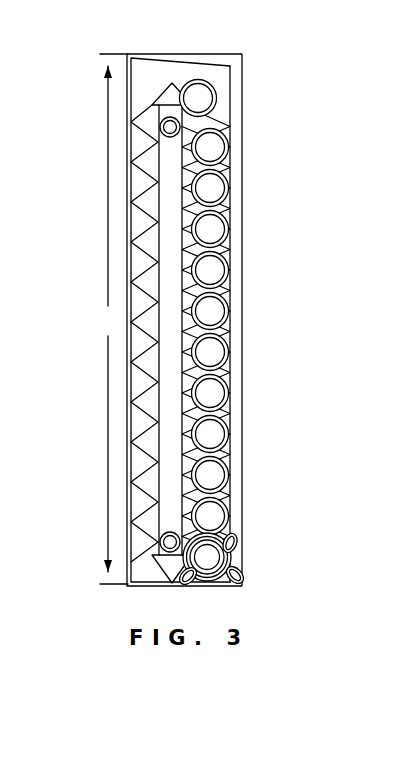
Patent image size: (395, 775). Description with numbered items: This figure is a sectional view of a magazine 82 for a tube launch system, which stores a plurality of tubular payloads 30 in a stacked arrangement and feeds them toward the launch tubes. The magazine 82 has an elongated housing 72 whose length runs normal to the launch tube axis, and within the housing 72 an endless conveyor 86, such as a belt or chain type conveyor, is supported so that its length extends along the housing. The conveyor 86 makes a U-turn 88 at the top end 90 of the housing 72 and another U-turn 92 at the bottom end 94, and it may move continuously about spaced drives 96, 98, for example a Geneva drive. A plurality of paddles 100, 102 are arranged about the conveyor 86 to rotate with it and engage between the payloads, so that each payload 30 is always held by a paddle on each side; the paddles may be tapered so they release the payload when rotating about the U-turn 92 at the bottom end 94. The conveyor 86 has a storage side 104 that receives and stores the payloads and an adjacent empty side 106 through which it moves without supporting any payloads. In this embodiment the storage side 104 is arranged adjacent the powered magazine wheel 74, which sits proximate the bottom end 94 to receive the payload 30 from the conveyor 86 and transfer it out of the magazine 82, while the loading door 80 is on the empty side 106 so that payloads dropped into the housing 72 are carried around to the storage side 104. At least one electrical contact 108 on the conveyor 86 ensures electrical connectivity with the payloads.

The payload 30 is at (208, 557).
The housing 72 is at (148, 240).
The powered magazine wheel 74 is at (240, 545).
The loading door 80 is at (148, 78).
The magazine 82 is at (90, 80).
The conveyor 86 is at (158, 353).
The U-turn 88 is at (220, 113).
The top end 90 is at (183, 54).
The U-turn 92 is at (138, 548).
The bottom end 94 is at (230, 590).
The drive 96 is at (160, 542).
The drive 98 is at (160, 128).
The paddle 100 is at (148, 409).
The paddle 102 is at (236, 378).
The storage side 104 is at (237, 285).
The empty side 106 is at (128, 186).
The electrical contact 108 is at (186, 342).